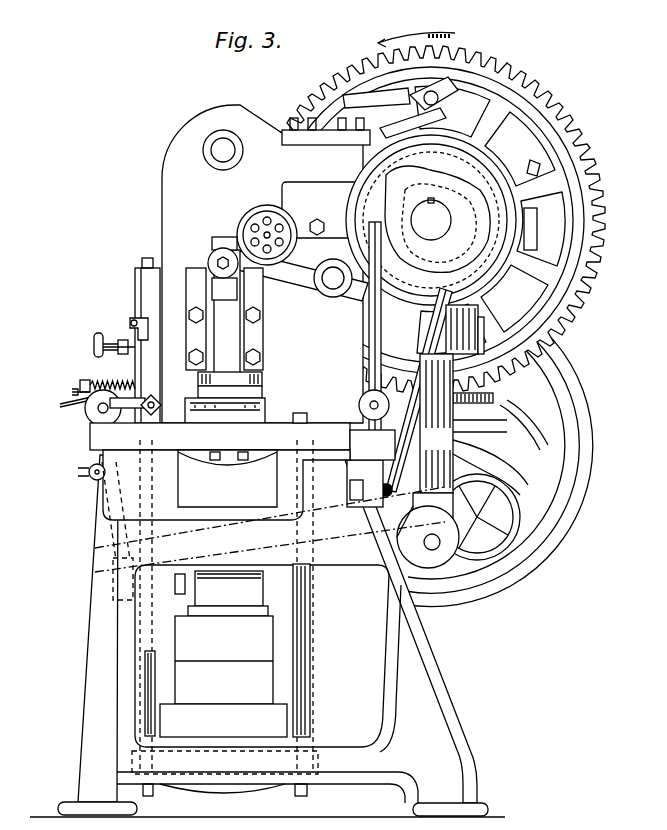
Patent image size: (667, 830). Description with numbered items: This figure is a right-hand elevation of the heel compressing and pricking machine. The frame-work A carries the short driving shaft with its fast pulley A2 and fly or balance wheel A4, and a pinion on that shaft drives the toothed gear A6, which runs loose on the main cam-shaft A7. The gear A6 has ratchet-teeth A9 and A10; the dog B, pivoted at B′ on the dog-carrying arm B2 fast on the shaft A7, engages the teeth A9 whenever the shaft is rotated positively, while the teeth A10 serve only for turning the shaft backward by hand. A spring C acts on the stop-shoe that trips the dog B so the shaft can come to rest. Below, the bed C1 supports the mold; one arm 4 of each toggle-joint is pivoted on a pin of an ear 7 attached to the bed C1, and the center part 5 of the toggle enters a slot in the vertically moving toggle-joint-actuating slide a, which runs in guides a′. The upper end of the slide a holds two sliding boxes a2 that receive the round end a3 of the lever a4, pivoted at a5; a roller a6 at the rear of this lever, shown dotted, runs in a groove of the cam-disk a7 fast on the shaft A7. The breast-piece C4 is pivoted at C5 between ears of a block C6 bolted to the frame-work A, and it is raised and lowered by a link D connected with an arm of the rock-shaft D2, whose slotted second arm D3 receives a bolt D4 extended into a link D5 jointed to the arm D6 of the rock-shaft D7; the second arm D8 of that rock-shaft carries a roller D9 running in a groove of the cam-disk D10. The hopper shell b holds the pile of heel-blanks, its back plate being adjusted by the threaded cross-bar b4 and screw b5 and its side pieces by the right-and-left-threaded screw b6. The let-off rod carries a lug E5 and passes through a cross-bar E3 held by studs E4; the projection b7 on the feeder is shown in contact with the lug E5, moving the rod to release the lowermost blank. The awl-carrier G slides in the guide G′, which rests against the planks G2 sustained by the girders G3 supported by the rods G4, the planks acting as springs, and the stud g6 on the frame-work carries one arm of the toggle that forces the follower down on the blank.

The frame-work A is at (267, 461).
The fast pulley A2 is at (508, 446).
The fly or balance wheel A4 is at (568, 513).
The toothed gear A6 is at (598, 182).
The main cam-shaft A7 is at (437, 219).
The ratchet-teeth A9 is at (552, 150).
The ratchet-teeth A10 is at (521, 172).
The toggle-joint-actuating slide a is at (229, 248).
The guides a′ is at (186, 336).
The sliding boxes a2 is at (212, 246).
The round end of lever a3 is at (208, 263).
The lever a4 is at (299, 275).
The pivot a5 is at (335, 290).
The roller or stud a6 is at (428, 310).
The cam-disk a7 is at (538, 230).
The dog B is at (428, 113).
The pivot B′ is at (406, 97).
The dog-carrying arm B2 is at (388, 132).
The shell or frame b is at (147, 340).
The threaded cross-bar b4 is at (127, 357).
The screw b5 is at (114, 343).
The right-and-left-threaded screw b6 is at (130, 322).
The projection b7 is at (60, 405).
The spring C is at (452, 399).
The awl-carrier G is at (423, 530).
The guide G′ is at (262, 608).
The planks G2 is at (224, 660).
The girders G3 is at (218, 764).
The rods G4 is at (165, 680).
The bed C1 is at (242, 591).
The breast-piece C4 is at (157, 403).
The pivot C5 is at (98, 410).
The block C6 is at (93, 425).
The link D is at (157, 407).
The rock-shaft D2 is at (93, 478).
The second arm D3 is at (108, 520).
The bolt D4 is at (113, 566).
The link D5 is at (270, 529).
The arm D6 is at (362, 468).
The rock-shaft D7 is at (365, 400).
The second arm D8 is at (369, 345).
The roller or stud D9 is at (364, 212).
The cam-disk D10 is at (366, 176).
The cross-bar E3 is at (92, 376).
The studs E4 is at (112, 378).
The lug E5 is at (82, 392).
The stud g6 is at (236, 150).
The toggle-joint arm 4 is at (262, 381).
The center part of toggle-joint 5 is at (262, 392).
The ear 7 is at (265, 410).